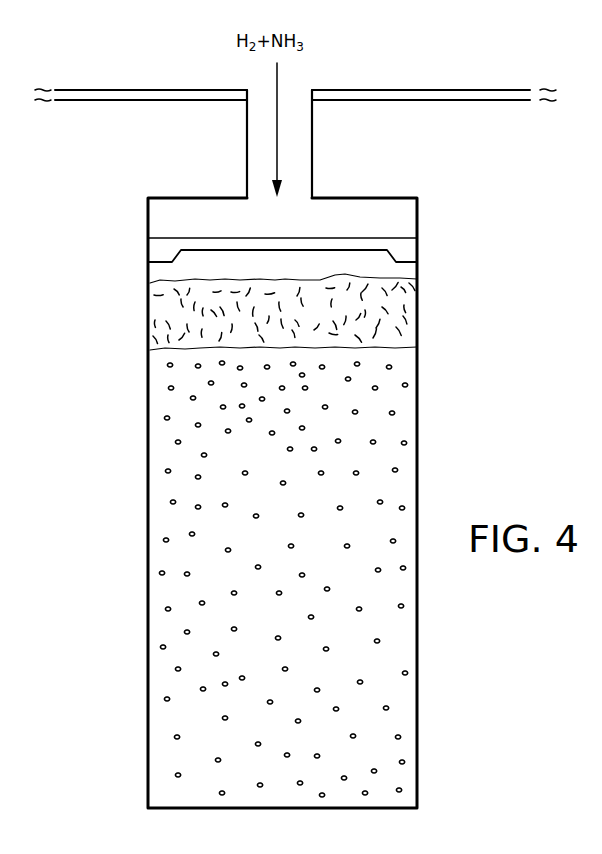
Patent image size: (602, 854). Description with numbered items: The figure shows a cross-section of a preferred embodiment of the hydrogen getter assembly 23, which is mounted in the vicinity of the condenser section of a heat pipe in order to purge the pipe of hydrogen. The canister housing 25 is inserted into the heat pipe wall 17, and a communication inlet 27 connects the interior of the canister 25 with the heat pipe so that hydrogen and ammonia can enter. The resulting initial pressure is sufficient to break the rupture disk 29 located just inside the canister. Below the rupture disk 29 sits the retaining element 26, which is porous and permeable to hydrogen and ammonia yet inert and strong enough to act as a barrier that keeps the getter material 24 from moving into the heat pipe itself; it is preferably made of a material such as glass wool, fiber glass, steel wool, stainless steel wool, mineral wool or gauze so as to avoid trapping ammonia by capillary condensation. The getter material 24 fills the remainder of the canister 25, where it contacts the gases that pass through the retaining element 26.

The heat pipe wall 17 is at (480, 101).
The hydrogen getter assembly 23 is at (139, 487).
The getter material 24 is at (407, 770).
The getter canister 25 is at (418, 399).
The retaining element 26 is at (156, 316).
The communication inlet 27 is at (313, 143).
The rupture disk 29 is at (148, 247).